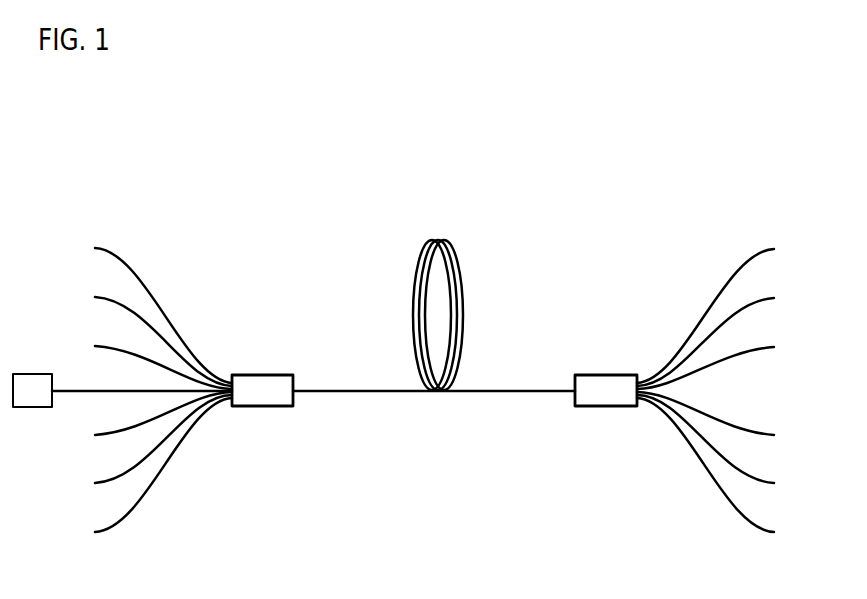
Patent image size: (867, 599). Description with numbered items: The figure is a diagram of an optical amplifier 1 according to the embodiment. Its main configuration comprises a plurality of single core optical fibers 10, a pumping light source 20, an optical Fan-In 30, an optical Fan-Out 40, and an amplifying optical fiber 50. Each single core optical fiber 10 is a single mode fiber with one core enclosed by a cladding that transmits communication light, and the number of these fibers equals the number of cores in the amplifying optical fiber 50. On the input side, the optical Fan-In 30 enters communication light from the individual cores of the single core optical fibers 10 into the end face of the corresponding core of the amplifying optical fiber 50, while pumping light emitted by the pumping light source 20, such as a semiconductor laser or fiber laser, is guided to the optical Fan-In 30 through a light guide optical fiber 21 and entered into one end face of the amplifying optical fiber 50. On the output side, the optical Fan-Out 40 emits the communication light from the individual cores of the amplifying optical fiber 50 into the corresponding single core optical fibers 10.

The optical amplifier 1 is at (304, 202).
The single core optical fiber 10 is at (129, 266).
The pumping light source 20 is at (34, 373).
The light guide optical fiber 21 is at (68, 395).
The optical Fan-In 30 is at (261, 393).
The optical Fan-Out 40 is at (610, 393).
The amplifying optical fiber 50 is at (482, 390).